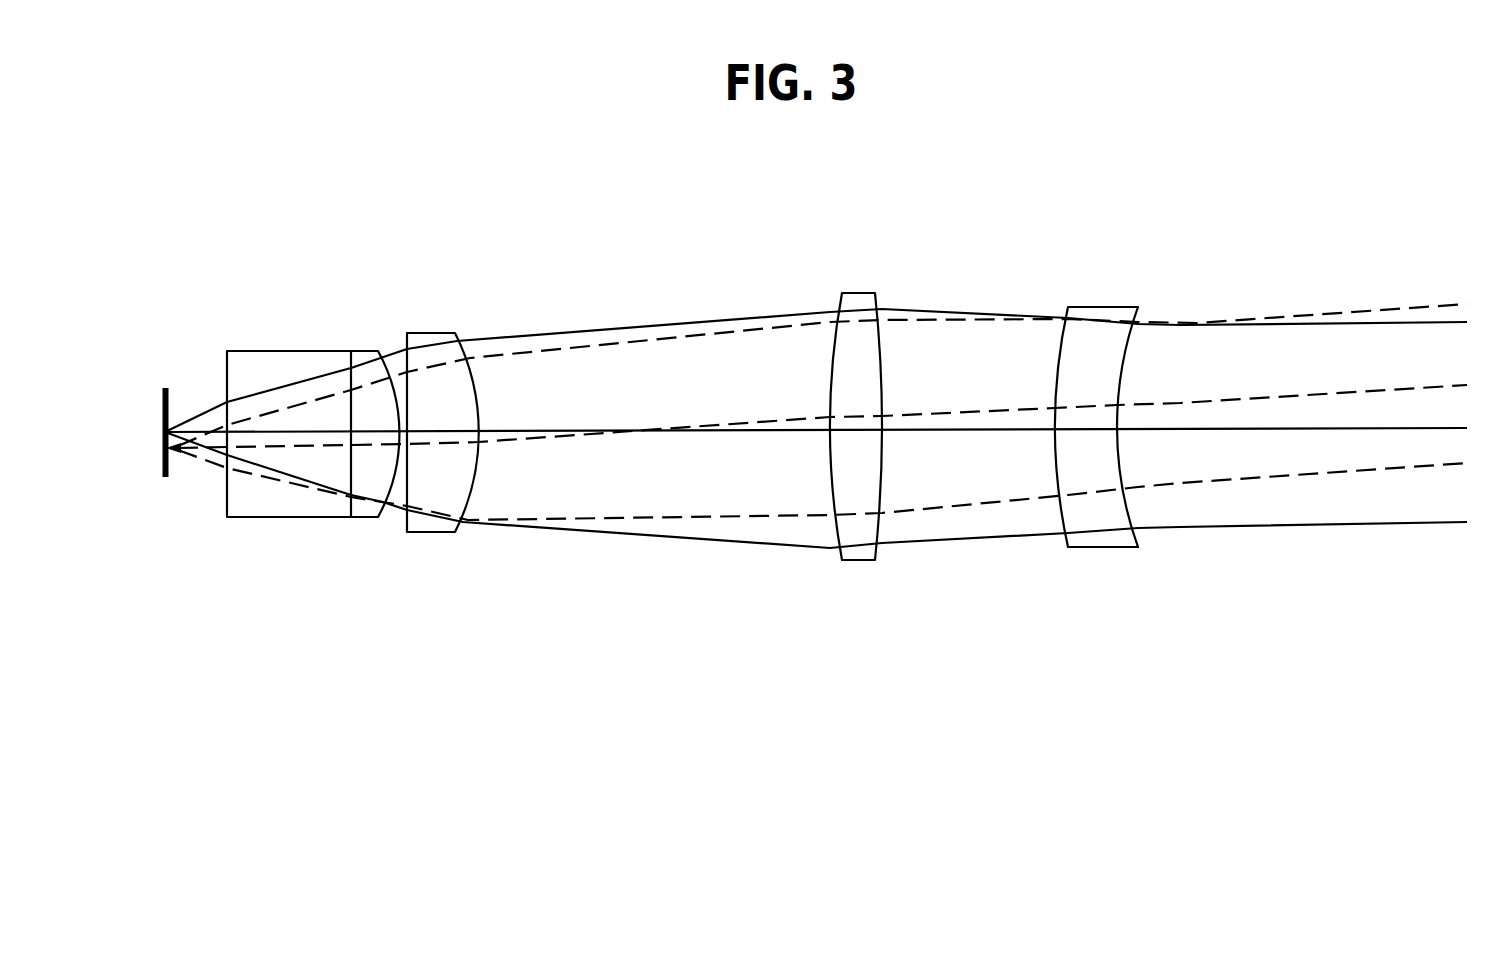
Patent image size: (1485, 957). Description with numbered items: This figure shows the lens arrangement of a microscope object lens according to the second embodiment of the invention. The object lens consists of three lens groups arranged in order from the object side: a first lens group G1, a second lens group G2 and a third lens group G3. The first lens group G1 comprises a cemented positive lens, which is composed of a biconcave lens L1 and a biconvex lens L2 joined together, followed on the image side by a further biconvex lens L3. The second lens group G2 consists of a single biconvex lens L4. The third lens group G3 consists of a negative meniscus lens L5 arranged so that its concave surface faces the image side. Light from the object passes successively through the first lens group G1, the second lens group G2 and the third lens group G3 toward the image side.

The biconcave lens L1 is at (268, 351).
The biconvex lens L2 is at (367, 351).
The biconvex lens L3 is at (437, 333).
The biconvex lens L4 is at (860, 293).
The negative meniscus lens L5 is at (1095, 307).
The first lens group G1 is at (360, 433).
The second lens group G2 is at (862, 419).
The third lens group G3 is at (1101, 420).